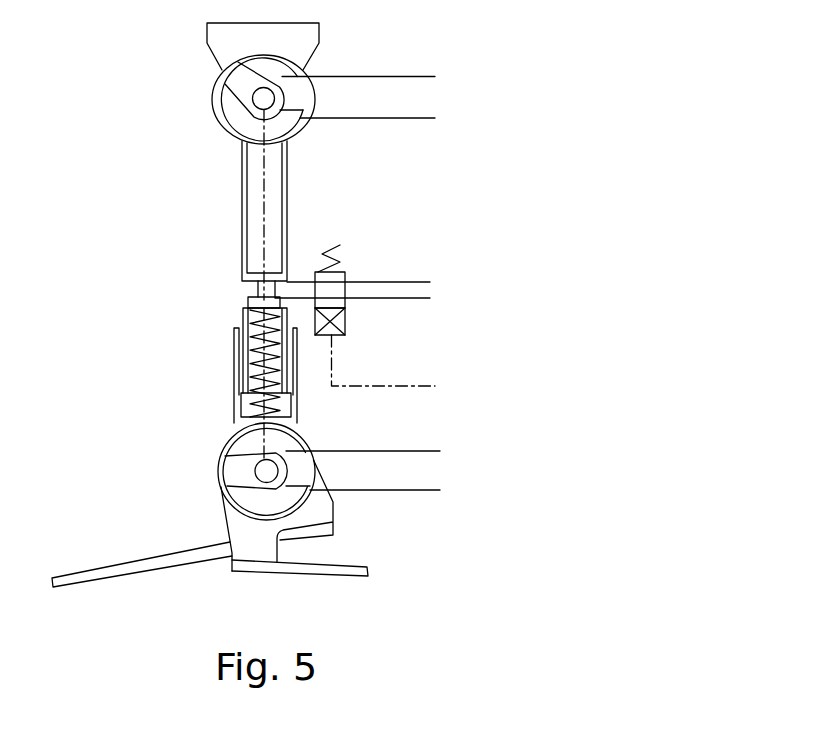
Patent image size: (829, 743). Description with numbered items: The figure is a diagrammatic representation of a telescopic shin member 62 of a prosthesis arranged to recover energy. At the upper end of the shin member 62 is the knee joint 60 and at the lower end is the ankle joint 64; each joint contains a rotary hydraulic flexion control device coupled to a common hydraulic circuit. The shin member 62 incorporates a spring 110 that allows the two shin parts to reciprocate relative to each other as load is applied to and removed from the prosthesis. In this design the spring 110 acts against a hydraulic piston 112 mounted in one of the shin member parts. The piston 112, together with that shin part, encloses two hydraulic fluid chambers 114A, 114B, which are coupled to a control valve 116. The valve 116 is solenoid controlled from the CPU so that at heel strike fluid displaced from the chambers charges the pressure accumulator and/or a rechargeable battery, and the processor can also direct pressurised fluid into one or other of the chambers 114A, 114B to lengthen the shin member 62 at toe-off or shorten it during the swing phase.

The knee joint 60 is at (162, 96).
The telescopic shin member 62 is at (242, 208).
The lower pivot joint 64 is at (212, 476).
The spring 110 is at (237, 365).
The hydraulic piston 112 is at (250, 317).
The hydraulic fluid chamber 114A is at (248, 283).
The hydraulic fluid chamber 114B is at (252, 305).
The control valve 116 is at (345, 273).